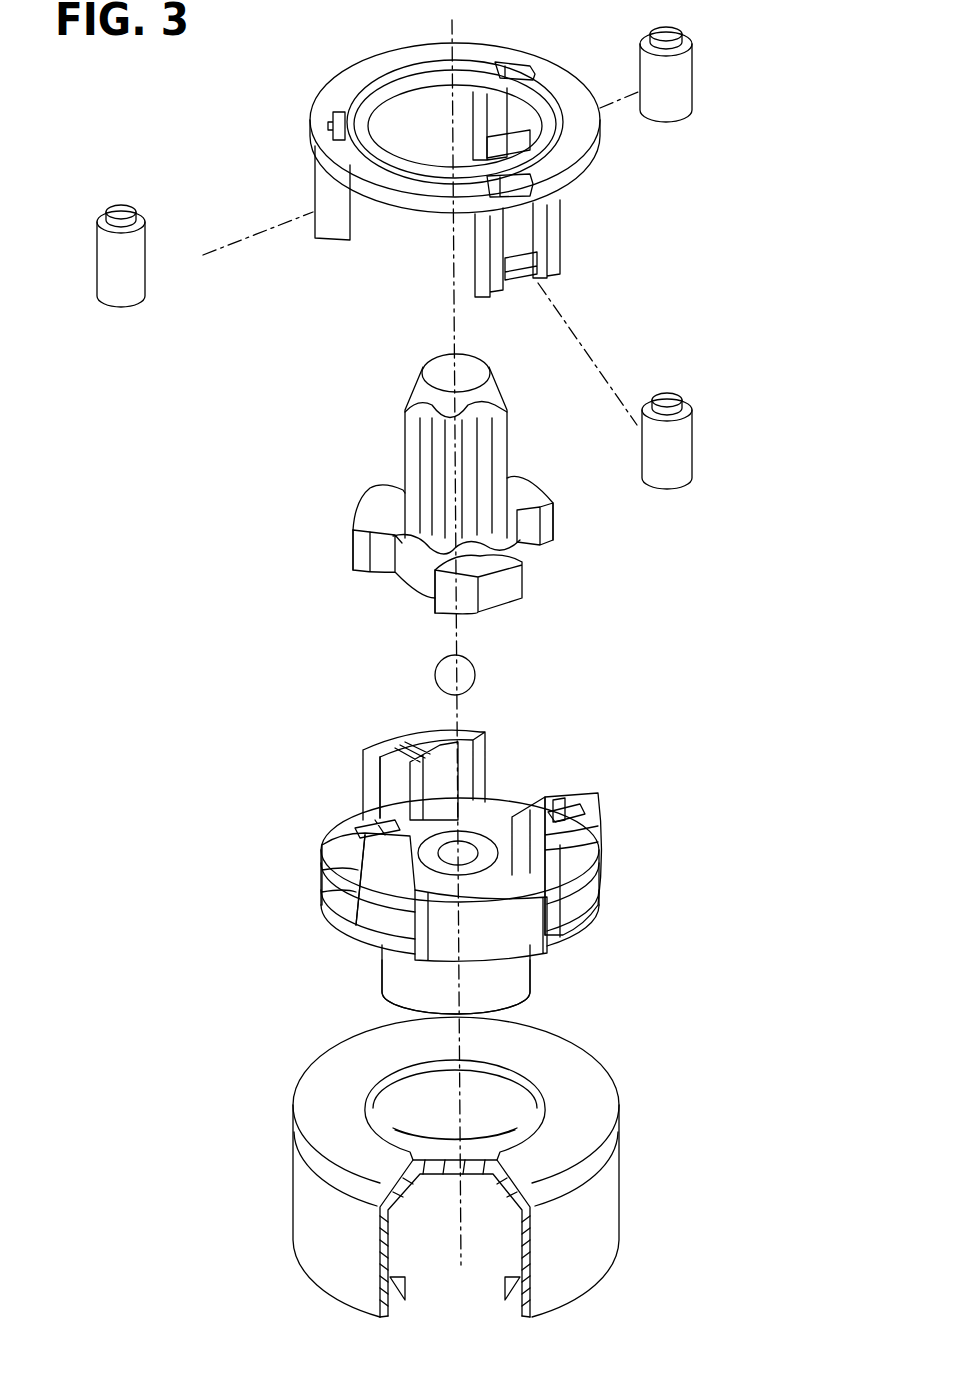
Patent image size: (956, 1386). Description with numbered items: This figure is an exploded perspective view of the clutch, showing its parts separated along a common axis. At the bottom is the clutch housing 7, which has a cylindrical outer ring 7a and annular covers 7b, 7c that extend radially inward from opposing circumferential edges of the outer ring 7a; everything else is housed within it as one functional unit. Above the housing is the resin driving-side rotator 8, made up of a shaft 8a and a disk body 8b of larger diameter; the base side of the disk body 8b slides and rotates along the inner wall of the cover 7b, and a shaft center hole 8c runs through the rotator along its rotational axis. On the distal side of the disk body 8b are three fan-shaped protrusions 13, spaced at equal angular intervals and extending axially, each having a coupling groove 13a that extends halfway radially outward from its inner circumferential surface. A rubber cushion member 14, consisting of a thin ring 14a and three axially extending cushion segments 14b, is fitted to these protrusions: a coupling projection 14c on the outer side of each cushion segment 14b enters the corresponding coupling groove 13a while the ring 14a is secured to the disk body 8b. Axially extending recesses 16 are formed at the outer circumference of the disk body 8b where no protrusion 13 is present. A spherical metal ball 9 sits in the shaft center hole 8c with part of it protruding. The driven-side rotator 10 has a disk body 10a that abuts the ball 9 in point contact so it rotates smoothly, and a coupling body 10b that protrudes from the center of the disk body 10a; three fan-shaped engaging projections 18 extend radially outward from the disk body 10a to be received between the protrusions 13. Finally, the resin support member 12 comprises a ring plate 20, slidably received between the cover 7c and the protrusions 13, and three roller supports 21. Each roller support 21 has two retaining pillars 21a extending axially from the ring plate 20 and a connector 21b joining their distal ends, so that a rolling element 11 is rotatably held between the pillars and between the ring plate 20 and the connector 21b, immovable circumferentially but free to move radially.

The clutch housing 7 is at (656, 1139).
The cylindrical outer ring 7a is at (300, 1180).
The annular cover 7b is at (458, 1165).
The annular cover 7c is at (575, 1048).
The driving-side rotator 8 is at (704, 735).
The shaft 8a is at (415, 992).
The disk body 8b is at (330, 915).
The shaft center hole 8c is at (470, 845).
The ball 9 is at (476, 680).
The driven-side rotator 10 is at (533, 418).
The disk body 10a is at (415, 578).
The coupling body 10b is at (420, 448).
The rolling element 11 is at (692, 70).
The support member 12 is at (570, 52).
The protrusion 13 is at (385, 750).
The coupling groove 13a is at (430, 750).
The cushion member 14 is at (520, 804).
The ring 14a is at (485, 902).
The cushion segment 14b is at (535, 808).
The coupling projection 14c is at (380, 766).
The recess 16 is at (452, 948).
The engaging projection 18 is at (520, 490).
The ring plate 20 is at (415, 195).
The roller support 21 is at (470, 118).
The retaining pillar 21a is at (560, 216).
The connector 21b is at (530, 284).